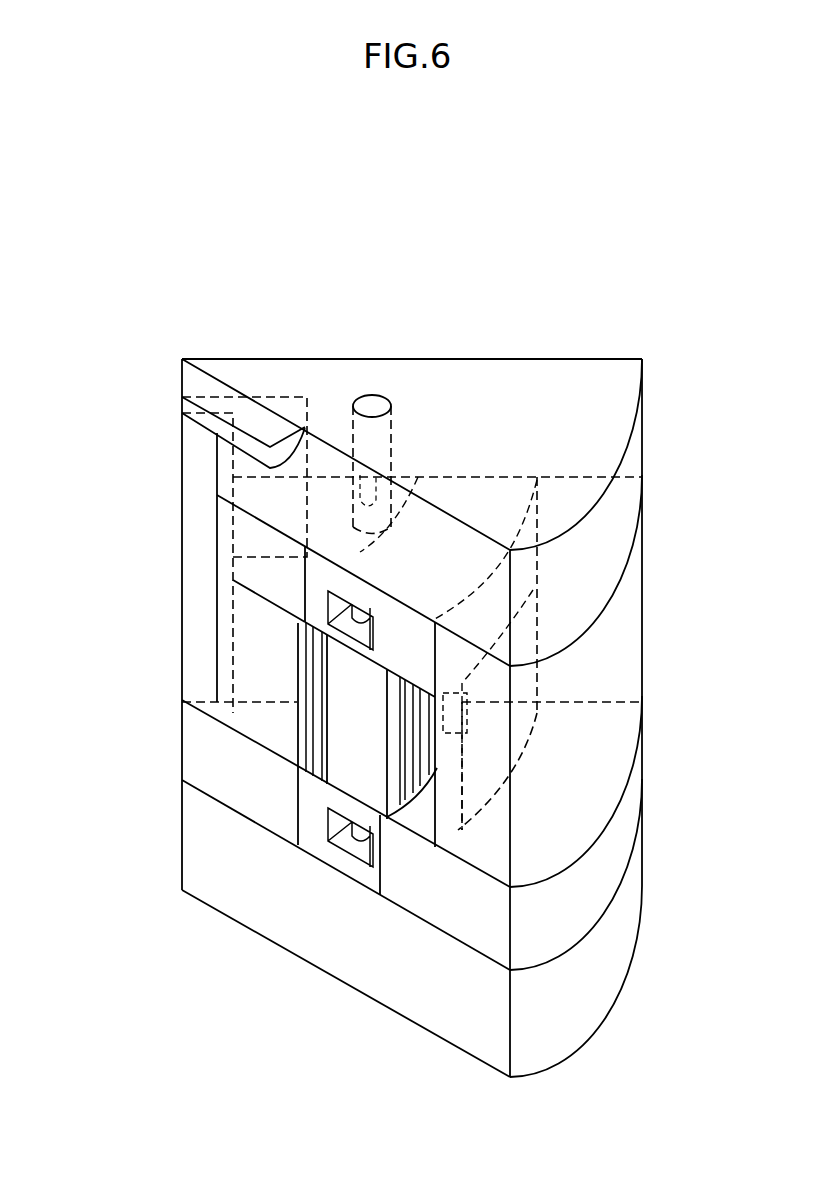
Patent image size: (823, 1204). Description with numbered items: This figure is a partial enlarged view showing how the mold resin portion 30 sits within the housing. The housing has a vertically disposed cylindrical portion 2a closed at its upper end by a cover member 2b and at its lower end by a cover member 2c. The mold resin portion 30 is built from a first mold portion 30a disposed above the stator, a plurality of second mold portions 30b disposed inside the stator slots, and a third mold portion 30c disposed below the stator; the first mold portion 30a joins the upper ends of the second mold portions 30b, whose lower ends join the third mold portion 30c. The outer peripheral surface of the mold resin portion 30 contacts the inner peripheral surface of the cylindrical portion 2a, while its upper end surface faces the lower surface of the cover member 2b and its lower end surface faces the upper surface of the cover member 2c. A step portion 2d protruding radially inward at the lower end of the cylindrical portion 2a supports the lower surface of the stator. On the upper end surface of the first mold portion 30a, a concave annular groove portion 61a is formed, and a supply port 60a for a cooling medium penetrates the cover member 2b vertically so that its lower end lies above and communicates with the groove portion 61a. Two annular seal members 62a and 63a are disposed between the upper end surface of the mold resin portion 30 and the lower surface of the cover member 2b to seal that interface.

The cylindrical portion 2a is at (592, 772).
The cover member 2b is at (615, 513).
The cover member 2c is at (585, 1000).
The step portion 2d is at (400, 858).
The mold resin portion 30 is at (225, 720).
The first mold portion 30a is at (320, 592).
The second mold portion 30b is at (343, 682).
The third mold portion 30c is at (310, 815).
The supply port 60a is at (382, 428).
The annular groove portion 61a is at (420, 562).
The annular seal member 62a is at (420, 560).
The annular seal member 63a is at (420, 567).